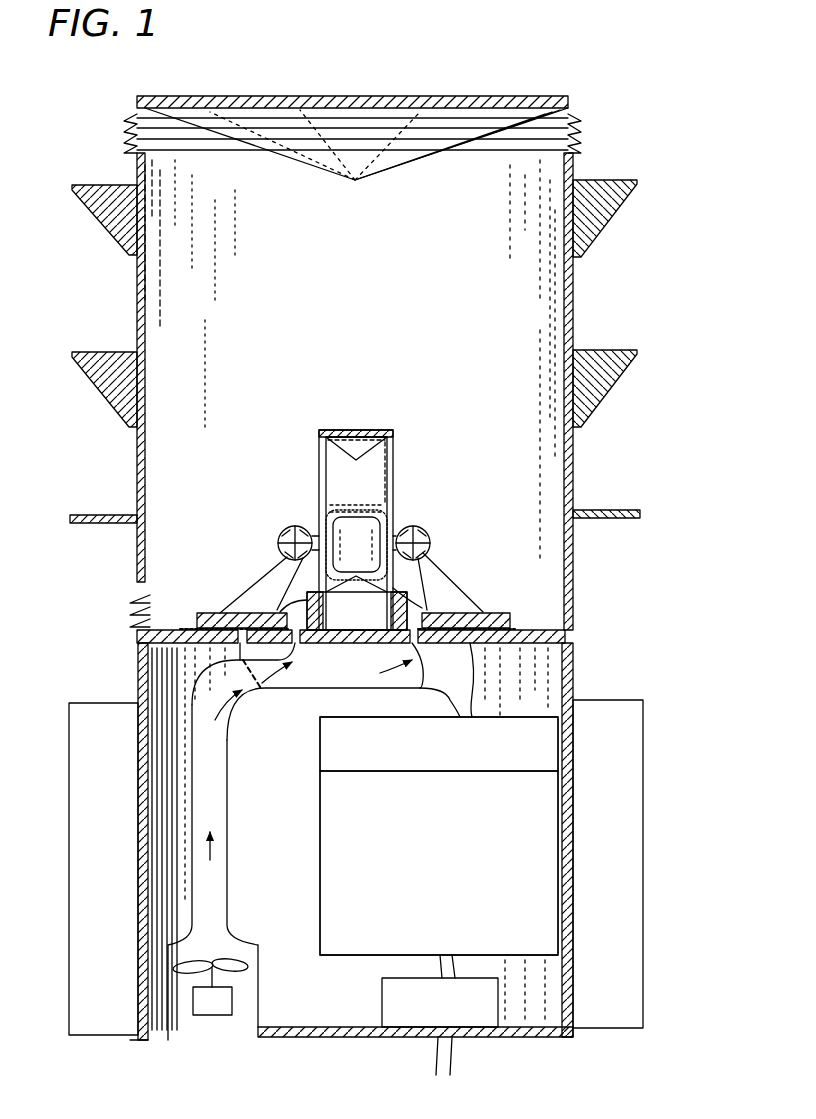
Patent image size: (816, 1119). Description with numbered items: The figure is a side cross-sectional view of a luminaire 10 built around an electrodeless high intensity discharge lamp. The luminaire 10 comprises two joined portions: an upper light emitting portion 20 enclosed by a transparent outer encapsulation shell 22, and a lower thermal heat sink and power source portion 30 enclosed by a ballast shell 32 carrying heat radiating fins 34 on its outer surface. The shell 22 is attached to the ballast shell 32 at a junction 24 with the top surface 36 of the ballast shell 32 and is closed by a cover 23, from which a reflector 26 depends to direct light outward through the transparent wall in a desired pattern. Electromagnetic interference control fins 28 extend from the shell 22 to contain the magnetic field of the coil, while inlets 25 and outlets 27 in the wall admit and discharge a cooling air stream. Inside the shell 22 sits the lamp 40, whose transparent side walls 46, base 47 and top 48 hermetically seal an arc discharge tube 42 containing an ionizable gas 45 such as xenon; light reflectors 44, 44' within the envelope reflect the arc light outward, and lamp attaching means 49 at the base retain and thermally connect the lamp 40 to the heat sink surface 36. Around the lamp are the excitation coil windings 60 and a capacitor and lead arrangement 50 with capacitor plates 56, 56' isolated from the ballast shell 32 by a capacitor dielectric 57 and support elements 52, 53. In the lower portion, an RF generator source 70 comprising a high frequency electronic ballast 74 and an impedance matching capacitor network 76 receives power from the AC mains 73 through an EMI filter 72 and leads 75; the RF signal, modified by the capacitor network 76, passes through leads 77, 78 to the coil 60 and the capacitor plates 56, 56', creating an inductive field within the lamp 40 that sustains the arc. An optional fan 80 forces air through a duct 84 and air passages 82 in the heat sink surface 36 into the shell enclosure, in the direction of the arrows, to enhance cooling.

The luminaire 10 is at (100, 465).
The light emitting portion 20 is at (595, 166).
The transparent outer encapsulation shell 22 is at (137, 287).
The cover 23 is at (342, 96).
The junction 24 is at (565, 636).
The inlets 25 is at (128, 606).
The reflector 26 is at (432, 152).
The outlets 27 is at (137, 120).
The electromagnetic interference control fins 28 is at (612, 214).
The thermal heat sink and power source portion 30 is at (582, 680).
The ballast shell 32 is at (565, 826).
The heat radiating fins 34 is at (69, 862).
The top surface of ballast shell 36 is at (566, 605).
The electrodeless high intensity arc discharge lamp 40 is at (393, 483).
The arc discharge tube 42 is at (340, 520).
The light reflector 44 is at (420, 597).
The light reflector 44' is at (324, 491).
The ionizable gas 45 is at (367, 517).
The transparent enclosing side walls 46 is at (393, 455).
The base 47 is at (357, 603).
The top 48 is at (352, 430).
The lamp attaching means 49 is at (300, 598).
The capacitor and lead arrangement 50 is at (272, 557).
The support element 52 is at (455, 575).
The bracket 53 is at (228, 608).
The capacitor plate 56 is at (477, 597).
The capacitor plate 56' is at (222, 595).
The capacitor dielectric 57 is at (193, 628).
The excitation coil windings 60 is at (430, 536).
The RF generator source 70 is at (318, 857).
The electromagnetic interference filter 72 is at (382, 996).
The AC mains 73 is at (456, 1053).
The high frequency electronic ballast 74 is at (320, 805).
The leads 75 is at (458, 964).
The impedance matching capacitor network 76 is at (320, 744).
The lead 77 is at (484, 698).
The lead 78 is at (460, 706).
The fan cooling means 80 is at (234, 1010).
The air passages 82 is at (313, 689).
The duct 84 is at (228, 835).